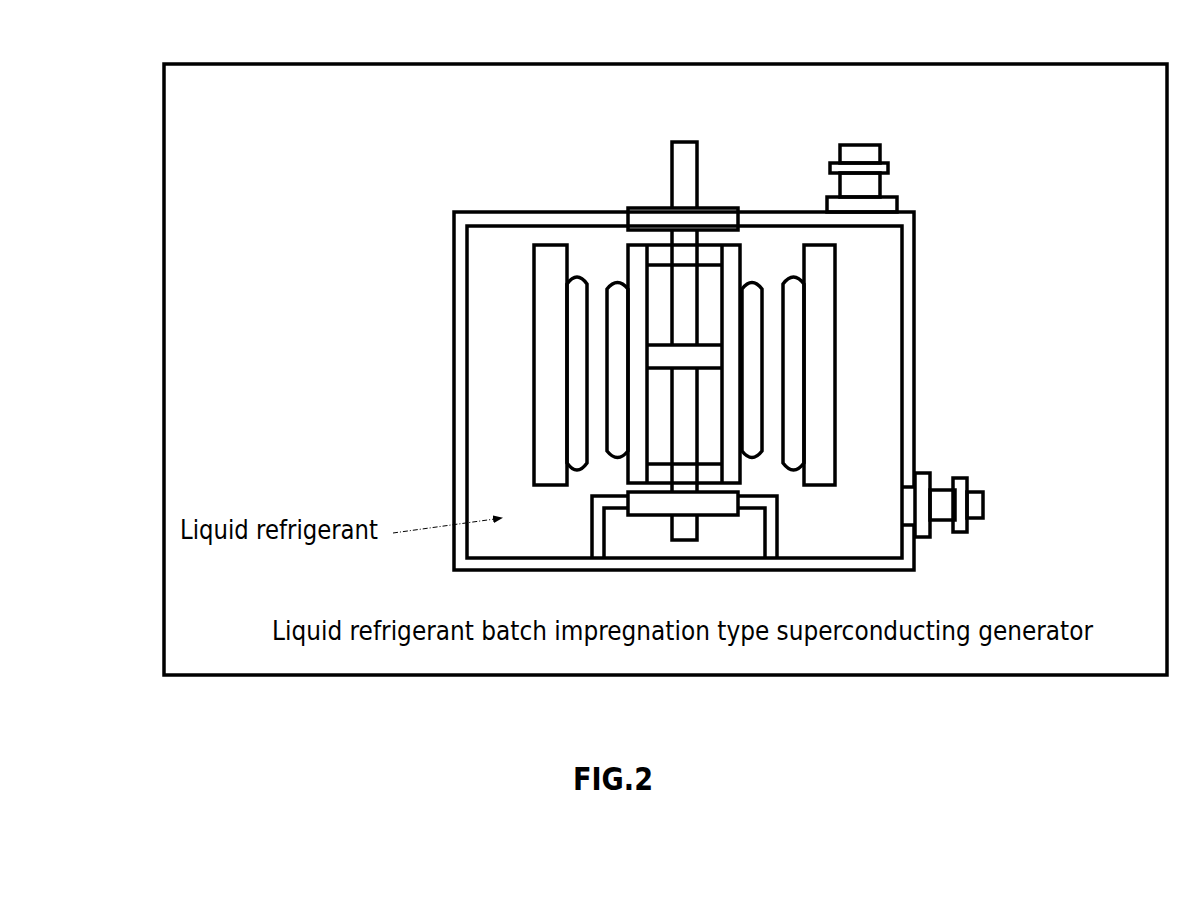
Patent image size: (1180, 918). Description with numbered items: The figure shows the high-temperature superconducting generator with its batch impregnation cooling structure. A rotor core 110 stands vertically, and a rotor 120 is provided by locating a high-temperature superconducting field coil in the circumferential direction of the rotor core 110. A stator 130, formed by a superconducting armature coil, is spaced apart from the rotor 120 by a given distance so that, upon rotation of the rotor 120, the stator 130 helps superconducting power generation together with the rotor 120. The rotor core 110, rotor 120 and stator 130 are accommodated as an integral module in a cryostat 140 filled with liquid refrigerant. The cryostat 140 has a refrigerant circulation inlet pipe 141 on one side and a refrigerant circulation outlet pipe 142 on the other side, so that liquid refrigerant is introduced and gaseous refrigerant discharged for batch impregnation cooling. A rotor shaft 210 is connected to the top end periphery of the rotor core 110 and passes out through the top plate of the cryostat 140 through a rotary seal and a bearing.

The rotor core 110 is at (738, 405).
The rotor 120 is at (766, 367).
The stator 130 is at (561, 364).
The cryostat 140 is at (922, 557).
The refrigerant circulation inlet pipe 141 is at (985, 502).
The refrigerant circulation outlet pipe 142 is at (883, 187).
The rotor shaft 210 is at (668, 149).